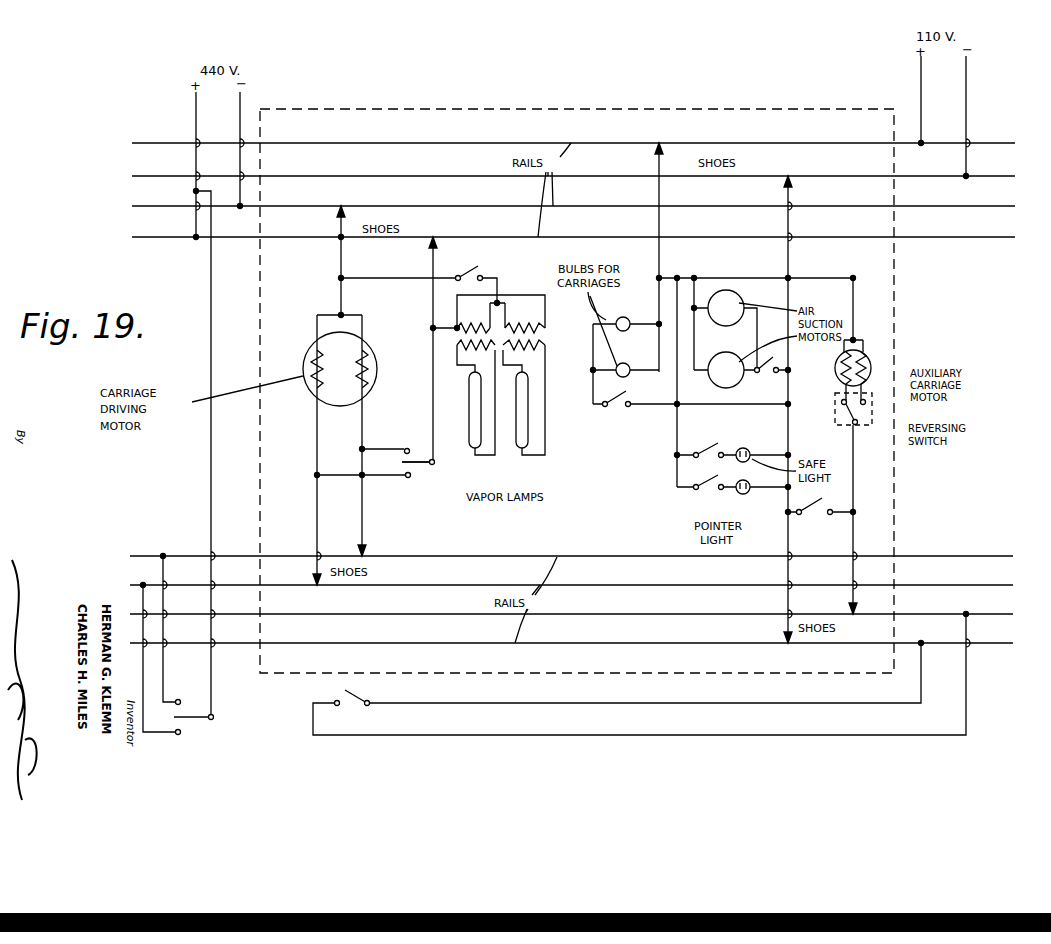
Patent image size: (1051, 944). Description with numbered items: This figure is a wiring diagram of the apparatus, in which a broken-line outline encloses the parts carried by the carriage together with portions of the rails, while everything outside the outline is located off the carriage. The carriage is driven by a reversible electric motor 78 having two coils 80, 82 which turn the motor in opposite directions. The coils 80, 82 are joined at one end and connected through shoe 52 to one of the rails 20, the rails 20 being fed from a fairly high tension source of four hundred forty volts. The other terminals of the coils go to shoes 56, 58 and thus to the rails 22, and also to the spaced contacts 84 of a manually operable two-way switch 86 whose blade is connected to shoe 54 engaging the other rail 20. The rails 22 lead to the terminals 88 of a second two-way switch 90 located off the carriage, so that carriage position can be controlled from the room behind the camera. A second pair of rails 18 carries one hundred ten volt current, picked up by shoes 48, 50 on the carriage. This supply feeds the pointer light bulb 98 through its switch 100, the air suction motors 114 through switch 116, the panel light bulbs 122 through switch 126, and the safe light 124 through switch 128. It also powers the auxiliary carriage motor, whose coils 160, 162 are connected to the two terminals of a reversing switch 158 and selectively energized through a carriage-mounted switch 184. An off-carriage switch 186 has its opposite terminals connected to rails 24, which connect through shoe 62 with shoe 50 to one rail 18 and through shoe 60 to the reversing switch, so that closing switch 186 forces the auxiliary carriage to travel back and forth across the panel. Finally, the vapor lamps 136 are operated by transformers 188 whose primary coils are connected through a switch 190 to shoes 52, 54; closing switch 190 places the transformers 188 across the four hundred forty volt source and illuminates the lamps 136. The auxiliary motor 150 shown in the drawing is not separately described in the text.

The rails 18 is at (947, 150).
The rails 20 is at (955, 213).
The rails 22 is at (947, 562).
The rails 24 is at (940, 623).
The shoe 48 is at (692, 157).
The shoe 50 is at (768, 164).
The shoe 52 is at (344, 210).
The shoe 54 is at (436, 240).
The shoe 56 is at (323, 586).
The shoe 58 is at (366, 559).
The shoe 60 is at (855, 618).
The shoe 62 is at (782, 642).
The electric motor 78 is at (309, 392).
The coil 80 is at (312, 358).
The coil 82 is at (376, 366).
The spaced contacts 84 is at (375, 462).
The two-way switch 86 is at (428, 468).
The terminals 88 is at (176, 707).
The two-way switch 90 is at (205, 721).
The light bulb 98 is at (763, 498).
The switch 100 is at (697, 490).
The motors 114 is at (732, 326).
The switch 116 is at (757, 378).
The light bulbs 122 is at (629, 364).
The safe light 124 is at (746, 448).
The switch 126 is at (687, 411).
The switch 128 is at (710, 436).
The vapor lamps 136 is at (472, 445).
The auxiliary carriage motor 150 is at (871, 373).
The reversing switch 158 is at (873, 409).
The coil 160 is at (864, 347).
The coil 162 is at (872, 357).
The switch 184 is at (806, 514).
The switch 186 is at (352, 710).
The transformers 188 is at (524, 338).
The switch 190 is at (477, 275).